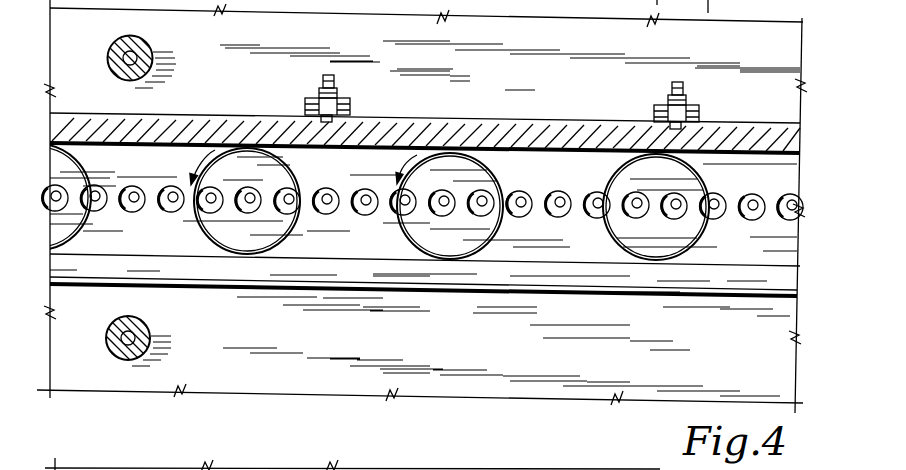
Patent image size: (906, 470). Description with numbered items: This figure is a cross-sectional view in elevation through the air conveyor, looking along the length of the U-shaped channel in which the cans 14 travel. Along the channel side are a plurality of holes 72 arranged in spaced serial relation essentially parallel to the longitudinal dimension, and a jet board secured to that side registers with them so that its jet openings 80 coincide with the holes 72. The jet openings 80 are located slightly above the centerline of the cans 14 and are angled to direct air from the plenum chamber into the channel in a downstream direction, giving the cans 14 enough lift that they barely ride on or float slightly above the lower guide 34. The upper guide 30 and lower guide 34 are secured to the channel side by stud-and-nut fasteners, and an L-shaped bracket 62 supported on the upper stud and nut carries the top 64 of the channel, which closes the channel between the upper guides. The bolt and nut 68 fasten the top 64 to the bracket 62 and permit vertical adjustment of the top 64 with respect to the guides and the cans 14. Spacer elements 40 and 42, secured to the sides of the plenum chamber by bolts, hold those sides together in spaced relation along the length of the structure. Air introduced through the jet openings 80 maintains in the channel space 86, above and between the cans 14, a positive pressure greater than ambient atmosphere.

The can 14 is at (687, 232).
The upper guide 30 is at (338, 148).
The lower guide 34 is at (530, 283).
The spacer element 40 is at (152, 55).
The spacer element 42 is at (150, 333).
The L-shaped bracket 62 is at (352, 108).
The top of the channel 64 is at (458, 130).
The bolt and nut 68 is at (334, 80).
The hole 72 is at (372, 212).
The jet opening 80 is at (173, 202).
The channel space 86 is at (143, 168).